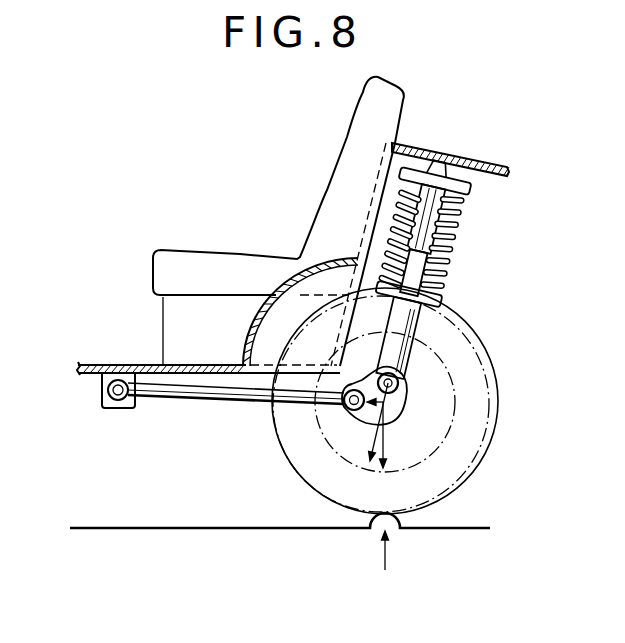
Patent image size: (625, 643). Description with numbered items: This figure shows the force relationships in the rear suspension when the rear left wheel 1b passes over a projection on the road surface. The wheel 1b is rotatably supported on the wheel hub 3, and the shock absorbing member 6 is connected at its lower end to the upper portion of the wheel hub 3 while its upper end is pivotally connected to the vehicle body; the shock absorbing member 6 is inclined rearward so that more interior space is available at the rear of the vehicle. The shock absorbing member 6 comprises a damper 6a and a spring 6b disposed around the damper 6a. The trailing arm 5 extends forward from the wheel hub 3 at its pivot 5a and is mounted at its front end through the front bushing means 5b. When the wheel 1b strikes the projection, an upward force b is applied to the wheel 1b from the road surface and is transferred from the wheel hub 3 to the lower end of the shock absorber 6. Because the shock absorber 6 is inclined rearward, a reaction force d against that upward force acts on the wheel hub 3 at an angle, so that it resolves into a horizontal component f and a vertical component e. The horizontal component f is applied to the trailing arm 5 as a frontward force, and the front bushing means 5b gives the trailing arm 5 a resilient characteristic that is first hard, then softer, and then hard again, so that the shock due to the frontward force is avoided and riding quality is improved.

The rear left wheel 1b is at (487, 412).
The wheel hub 3 is at (403, 412).
The trailing arm 5 is at (246, 404).
The link pivot 5a is at (343, 406).
The front bushing means 5b is at (121, 410).
The shock absorbing member 6 is at (440, 269).
The damper 6a is at (413, 323).
The spring 6b is at (448, 218).
The upward force b is at (390, 566).
The reaction force d is at (376, 432).
The vertical component e is at (388, 432).
The horizontal component f is at (374, 381).